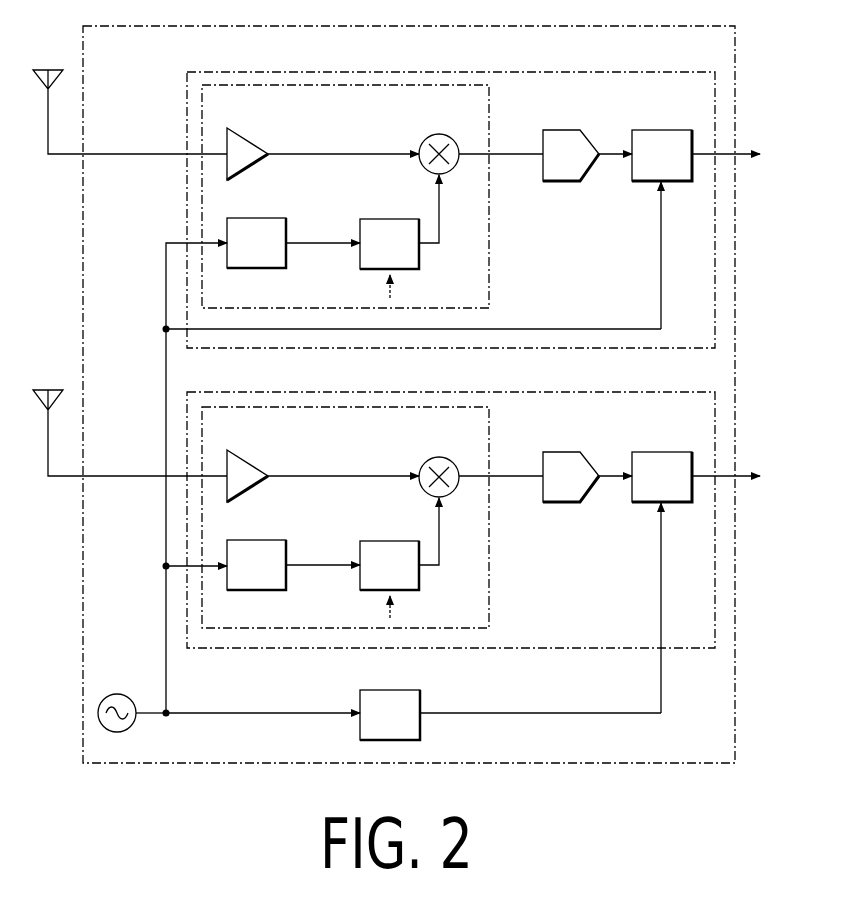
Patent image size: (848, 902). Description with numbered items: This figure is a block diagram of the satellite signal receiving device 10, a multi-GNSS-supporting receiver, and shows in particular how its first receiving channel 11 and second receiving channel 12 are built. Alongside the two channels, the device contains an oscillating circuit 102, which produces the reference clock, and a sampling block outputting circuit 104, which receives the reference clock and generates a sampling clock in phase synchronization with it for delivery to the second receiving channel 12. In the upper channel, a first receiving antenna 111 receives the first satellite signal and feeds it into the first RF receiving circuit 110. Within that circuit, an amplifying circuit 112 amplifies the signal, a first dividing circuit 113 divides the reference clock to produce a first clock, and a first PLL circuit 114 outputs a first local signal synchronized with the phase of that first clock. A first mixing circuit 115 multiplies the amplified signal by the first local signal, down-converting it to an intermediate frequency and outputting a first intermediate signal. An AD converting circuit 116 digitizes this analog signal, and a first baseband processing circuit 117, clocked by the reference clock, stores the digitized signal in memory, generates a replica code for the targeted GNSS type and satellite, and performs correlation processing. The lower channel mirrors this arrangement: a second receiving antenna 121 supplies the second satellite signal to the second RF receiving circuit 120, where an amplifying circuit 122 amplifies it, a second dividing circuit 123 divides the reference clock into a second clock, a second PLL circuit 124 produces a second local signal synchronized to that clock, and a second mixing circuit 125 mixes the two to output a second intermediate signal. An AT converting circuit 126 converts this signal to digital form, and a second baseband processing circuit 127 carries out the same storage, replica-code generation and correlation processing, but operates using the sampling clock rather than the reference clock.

The satellite signal receiving device 10 is at (206, 26).
The first receiving channel 11 is at (441, 71).
The first RF receiving circuit 110 is at (492, 96).
The first receiving antenna 111 is at (58, 69).
The amplifying circuit 112 is at (248, 146).
The first dividing circuit 113 is at (242, 220).
The first PLL circuit 114 is at (405, 223).
The first mixing circuit 115 is at (433, 137).
The AD converting circuit 116 is at (562, 133).
The first baseband processing circuit 117 is at (647, 133).
The second receiving channel 12 is at (441, 392).
The second RF receiving circuit 120 is at (492, 415).
The second receiving antenna 121 is at (58, 389).
The amplifying circuit 122 is at (248, 467).
The second dividing circuit 123 is at (242, 540).
The second PLL circuit 124 is at (405, 543).
The second mixing circuit 125 is at (433, 458).
The AT converting circuit 126 is at (562, 454).
The second baseband processing circuit 127 is at (647, 454).
The oscillating circuit 102 is at (136, 700).
The sampling block outputting circuit 104 is at (408, 690).